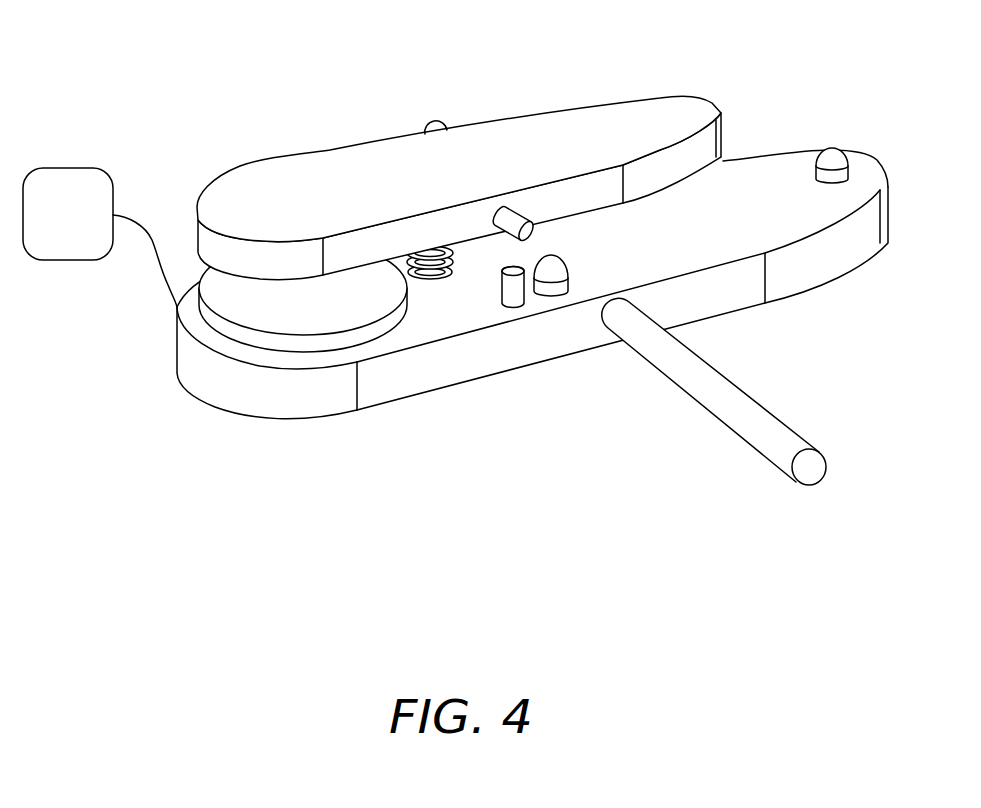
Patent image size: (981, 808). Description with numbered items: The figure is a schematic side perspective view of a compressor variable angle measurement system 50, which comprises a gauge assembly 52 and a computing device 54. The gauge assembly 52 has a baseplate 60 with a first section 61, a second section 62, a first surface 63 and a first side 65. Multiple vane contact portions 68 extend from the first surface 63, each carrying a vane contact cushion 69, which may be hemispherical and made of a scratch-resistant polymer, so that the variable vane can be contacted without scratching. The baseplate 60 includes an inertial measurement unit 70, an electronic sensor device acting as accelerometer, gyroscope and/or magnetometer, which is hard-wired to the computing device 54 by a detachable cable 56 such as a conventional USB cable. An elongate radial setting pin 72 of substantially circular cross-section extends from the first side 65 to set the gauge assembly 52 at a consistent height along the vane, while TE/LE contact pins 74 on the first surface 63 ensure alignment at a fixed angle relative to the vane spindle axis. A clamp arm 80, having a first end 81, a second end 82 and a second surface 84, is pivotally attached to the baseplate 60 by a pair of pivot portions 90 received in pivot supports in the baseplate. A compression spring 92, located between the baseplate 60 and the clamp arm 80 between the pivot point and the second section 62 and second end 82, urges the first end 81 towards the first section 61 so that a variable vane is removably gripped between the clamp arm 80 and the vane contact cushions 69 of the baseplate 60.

The compressor variable angle measurement system 50 is at (151, 463).
The gauge assembly 52 is at (442, 140).
The computing device 54 is at (60, 168).
The detachable cable 56 is at (150, 232).
The baseplate 60 is at (509, 300).
The first section 61 is at (802, 302).
The second section 62 is at (167, 377).
The first surface 63 is at (800, 212).
The first side 65 is at (717, 300).
The vane contact portions 68 is at (730, 176).
The vane contact cushion 69 is at (839, 152).
The inertial measurement unit 70 is at (290, 334).
The radial setting pin 72 is at (748, 434).
The TE/LE contact pins 74 is at (522, 294).
The clamp arm 80 is at (459, 140).
The first end 81 is at (614, 91).
The second end 82 is at (222, 110).
The second surface 84 is at (512, 143).
The pivot portions 90 is at (500, 212).
The spring 92 is at (428, 279).